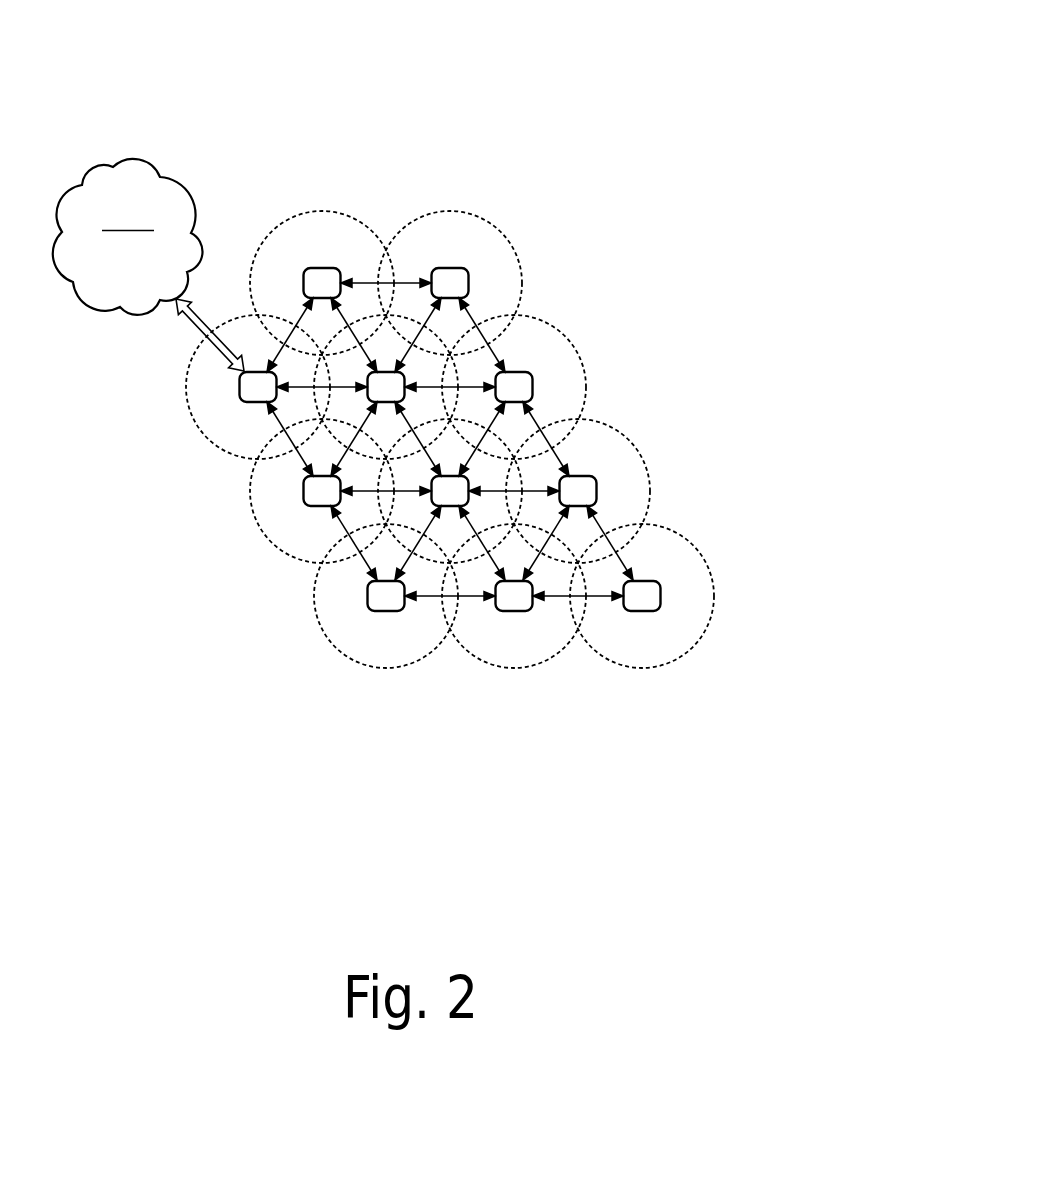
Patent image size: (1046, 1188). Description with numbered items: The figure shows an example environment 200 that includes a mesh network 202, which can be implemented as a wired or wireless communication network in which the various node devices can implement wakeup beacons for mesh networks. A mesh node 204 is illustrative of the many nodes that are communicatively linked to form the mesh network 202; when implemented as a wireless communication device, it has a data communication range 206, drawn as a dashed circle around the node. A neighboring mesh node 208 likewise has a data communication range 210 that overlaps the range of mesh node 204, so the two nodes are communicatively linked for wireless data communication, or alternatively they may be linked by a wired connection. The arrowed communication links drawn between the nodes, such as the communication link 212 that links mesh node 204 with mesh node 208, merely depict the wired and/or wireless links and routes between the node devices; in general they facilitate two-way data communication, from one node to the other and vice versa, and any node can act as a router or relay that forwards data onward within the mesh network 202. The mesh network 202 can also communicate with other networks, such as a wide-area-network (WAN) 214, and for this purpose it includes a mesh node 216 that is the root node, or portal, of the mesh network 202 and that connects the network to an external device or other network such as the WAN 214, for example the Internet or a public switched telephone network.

The environment 200 is at (689, 81).
The mesh network 202 is at (241, 601).
The mesh node 204 is at (526, 371).
The data communication range 206 is at (587, 385).
The neighboring mesh node 208 is at (457, 267).
The data communication range 210 is at (428, 212).
The communication link 212 is at (482, 322).
The wide-area-network (WAN) 214 is at (145, 268).
The mesh node (root node) 216 is at (250, 402).